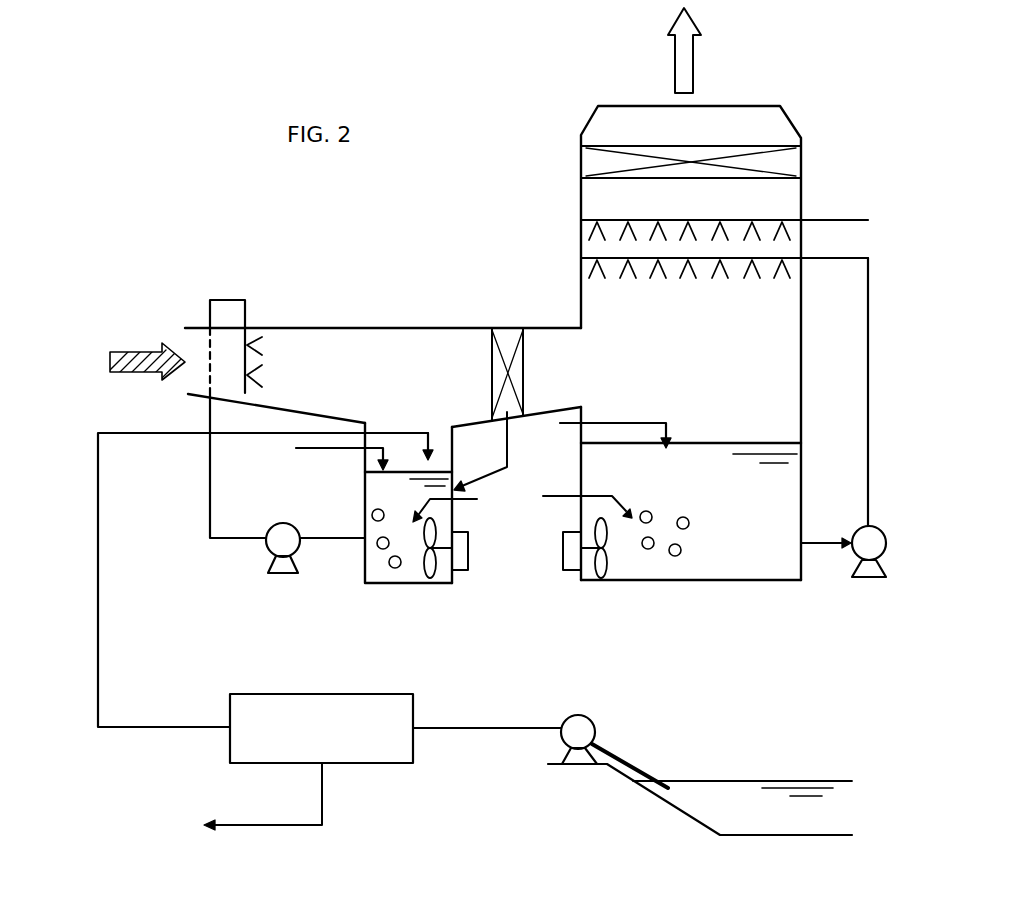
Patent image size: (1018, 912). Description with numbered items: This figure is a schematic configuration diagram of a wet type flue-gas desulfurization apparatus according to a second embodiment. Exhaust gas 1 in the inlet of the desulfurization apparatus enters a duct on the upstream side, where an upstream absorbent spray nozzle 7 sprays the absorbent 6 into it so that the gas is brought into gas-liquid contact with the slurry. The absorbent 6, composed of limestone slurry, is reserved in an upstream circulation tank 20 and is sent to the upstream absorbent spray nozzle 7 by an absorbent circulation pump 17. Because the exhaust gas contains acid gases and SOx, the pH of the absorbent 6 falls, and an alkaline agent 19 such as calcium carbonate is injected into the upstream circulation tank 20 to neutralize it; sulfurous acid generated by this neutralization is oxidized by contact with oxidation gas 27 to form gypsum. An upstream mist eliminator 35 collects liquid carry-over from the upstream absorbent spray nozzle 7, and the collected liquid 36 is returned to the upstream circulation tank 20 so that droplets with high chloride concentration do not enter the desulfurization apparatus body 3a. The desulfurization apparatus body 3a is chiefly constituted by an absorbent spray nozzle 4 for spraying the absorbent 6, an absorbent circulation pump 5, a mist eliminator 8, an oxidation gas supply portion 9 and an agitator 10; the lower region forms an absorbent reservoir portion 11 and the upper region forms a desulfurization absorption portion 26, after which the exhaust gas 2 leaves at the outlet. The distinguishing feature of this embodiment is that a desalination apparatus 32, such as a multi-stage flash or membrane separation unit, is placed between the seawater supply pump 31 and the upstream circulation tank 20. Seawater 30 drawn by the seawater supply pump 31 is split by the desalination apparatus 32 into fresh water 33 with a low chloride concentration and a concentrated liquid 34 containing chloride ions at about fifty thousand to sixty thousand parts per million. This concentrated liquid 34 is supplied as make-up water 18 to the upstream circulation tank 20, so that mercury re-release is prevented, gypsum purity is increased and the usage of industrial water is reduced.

The exhaust gas in the inlet of the desulfurization apparatus 1 is at (135, 350).
The exhaust gas in the outlet of the desulfurization apparatus 2 is at (688, 62).
The desulfurization apparatus body 3a is at (822, 176).
The absorbent spray nozzle 4 is at (782, 262).
The absorbent circulation pump 5 is at (876, 536).
The absorbent 6 is at (446, 573).
The upstream absorbent spray nozzle 7 is at (250, 330).
The mist eliminator 8 is at (592, 155).
The oxidation gas supply portion 9 is at (472, 505).
The agitator 10 is at (463, 572).
The absorbent reservoir portion 11 is at (922, 440).
The absorbent circulation pump 17 is at (275, 545).
The make-up water 18 is at (413, 433).
The alkaline agent 19 is at (464, 441).
The upstream circulation tank 20 is at (411, 584).
The desulfurization absorption portion 26 is at (922, 186).
The oxidation gas 27 is at (395, 568).
The seawater 30 is at (690, 800).
The seawater supply pump 31 is at (585, 727).
The desalination apparatus 32 is at (240, 748).
The fresh water 33 is at (245, 801).
The concentrated liquid 34 is at (98, 592).
The upstream mist eliminator 35 is at (488, 350).
The collected liquid 36 is at (507, 467).